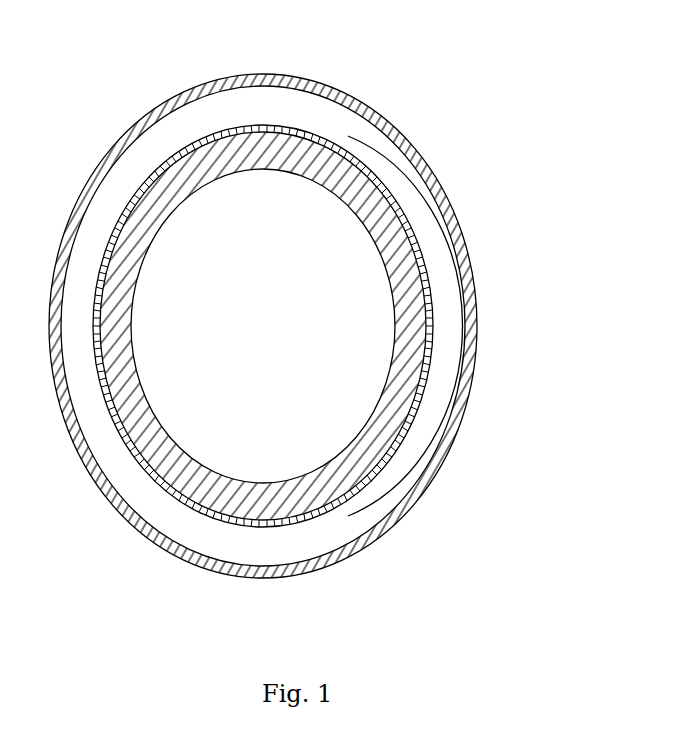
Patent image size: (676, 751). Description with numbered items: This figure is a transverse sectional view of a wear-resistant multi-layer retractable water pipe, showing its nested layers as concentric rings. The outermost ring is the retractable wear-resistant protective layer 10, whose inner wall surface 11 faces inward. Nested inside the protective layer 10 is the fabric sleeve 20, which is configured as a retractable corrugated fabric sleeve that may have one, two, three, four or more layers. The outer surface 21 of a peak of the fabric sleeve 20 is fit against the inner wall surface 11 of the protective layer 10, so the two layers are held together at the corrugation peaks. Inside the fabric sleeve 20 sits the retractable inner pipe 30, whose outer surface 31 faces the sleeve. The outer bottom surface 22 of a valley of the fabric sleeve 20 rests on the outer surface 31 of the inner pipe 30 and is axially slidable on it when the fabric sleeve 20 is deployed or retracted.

The wear-resistant protective layer 10 is at (400, 180).
The inner wall surface 11 is at (366, 163).
The fabric sleeve 20 is at (413, 236).
The outer surface of a peak 21 is at (430, 275).
The outer bottom surface of a valley 22 is at (413, 327).
The retractable inner pipe 30 is at (427, 377).
The outer surface of the inner pipe 31 is at (392, 413).